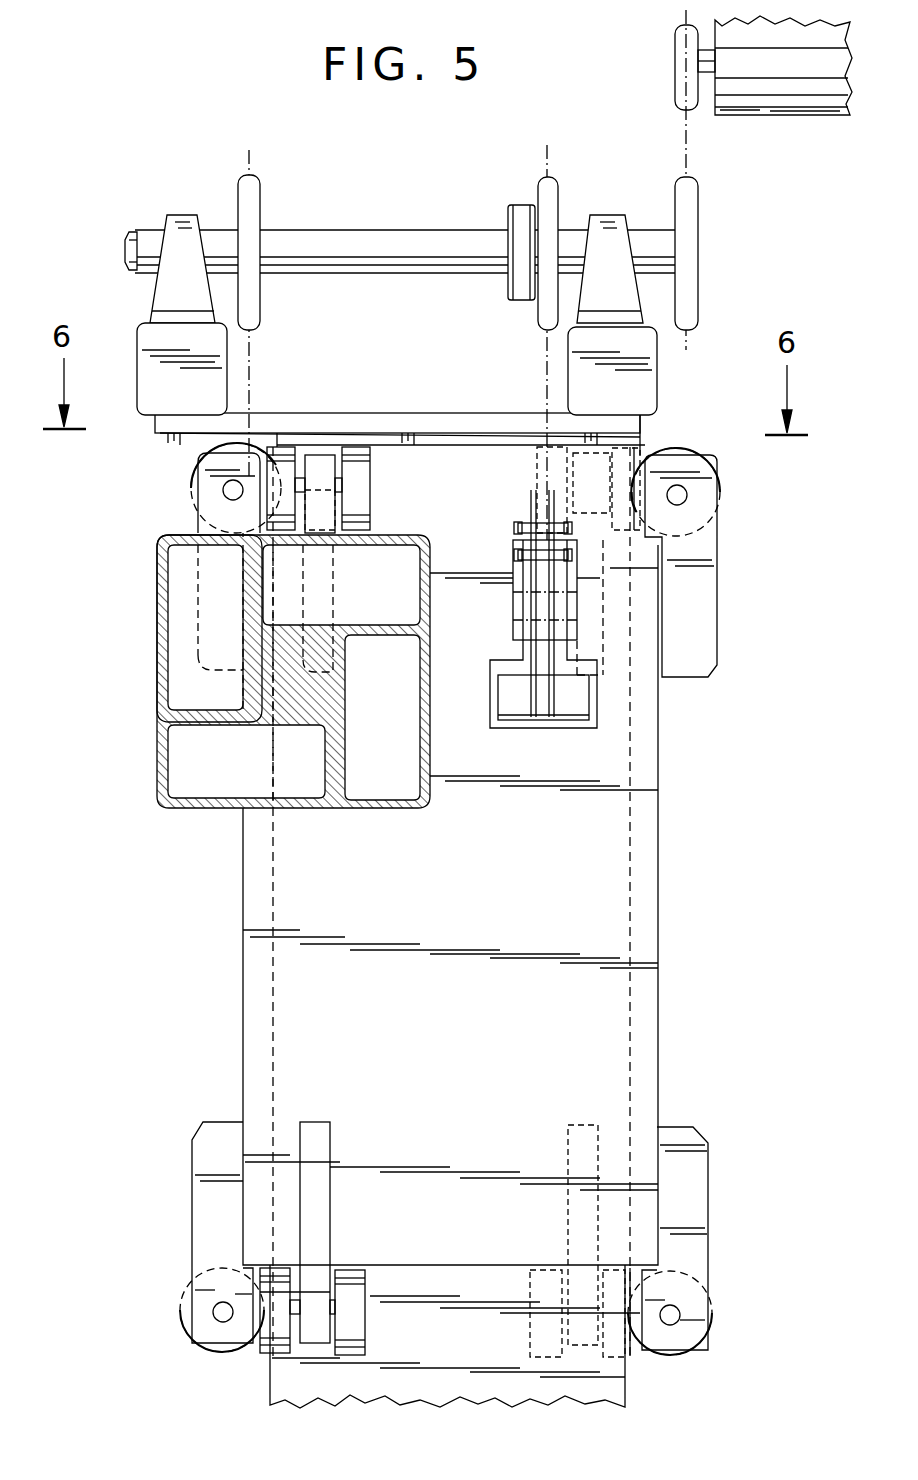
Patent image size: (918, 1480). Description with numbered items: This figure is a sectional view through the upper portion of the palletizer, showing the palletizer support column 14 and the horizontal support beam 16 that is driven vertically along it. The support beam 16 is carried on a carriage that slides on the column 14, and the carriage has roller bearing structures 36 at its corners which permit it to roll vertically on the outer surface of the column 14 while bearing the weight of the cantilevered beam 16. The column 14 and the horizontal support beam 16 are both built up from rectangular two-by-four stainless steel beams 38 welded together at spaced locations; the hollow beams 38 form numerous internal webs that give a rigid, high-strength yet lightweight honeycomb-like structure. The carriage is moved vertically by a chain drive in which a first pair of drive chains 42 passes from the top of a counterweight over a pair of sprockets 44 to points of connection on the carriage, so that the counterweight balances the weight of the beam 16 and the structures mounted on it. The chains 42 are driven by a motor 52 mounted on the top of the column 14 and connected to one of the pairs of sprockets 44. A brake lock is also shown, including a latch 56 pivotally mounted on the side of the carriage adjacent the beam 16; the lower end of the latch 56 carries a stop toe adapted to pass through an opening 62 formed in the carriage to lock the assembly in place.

The palletizer support column 14 is at (605, 1390).
The horizontal support beam 16 is at (365, 808).
The roller bearing structure 36 is at (193, 492).
The rectangular beam 38 is at (157, 600).
The drive chain 42 is at (540, 355).
The sprocket 44 is at (243, 195).
The motor 52 is at (763, 100).
The latch 56 is at (548, 697).
The opening 62 is at (582, 692).